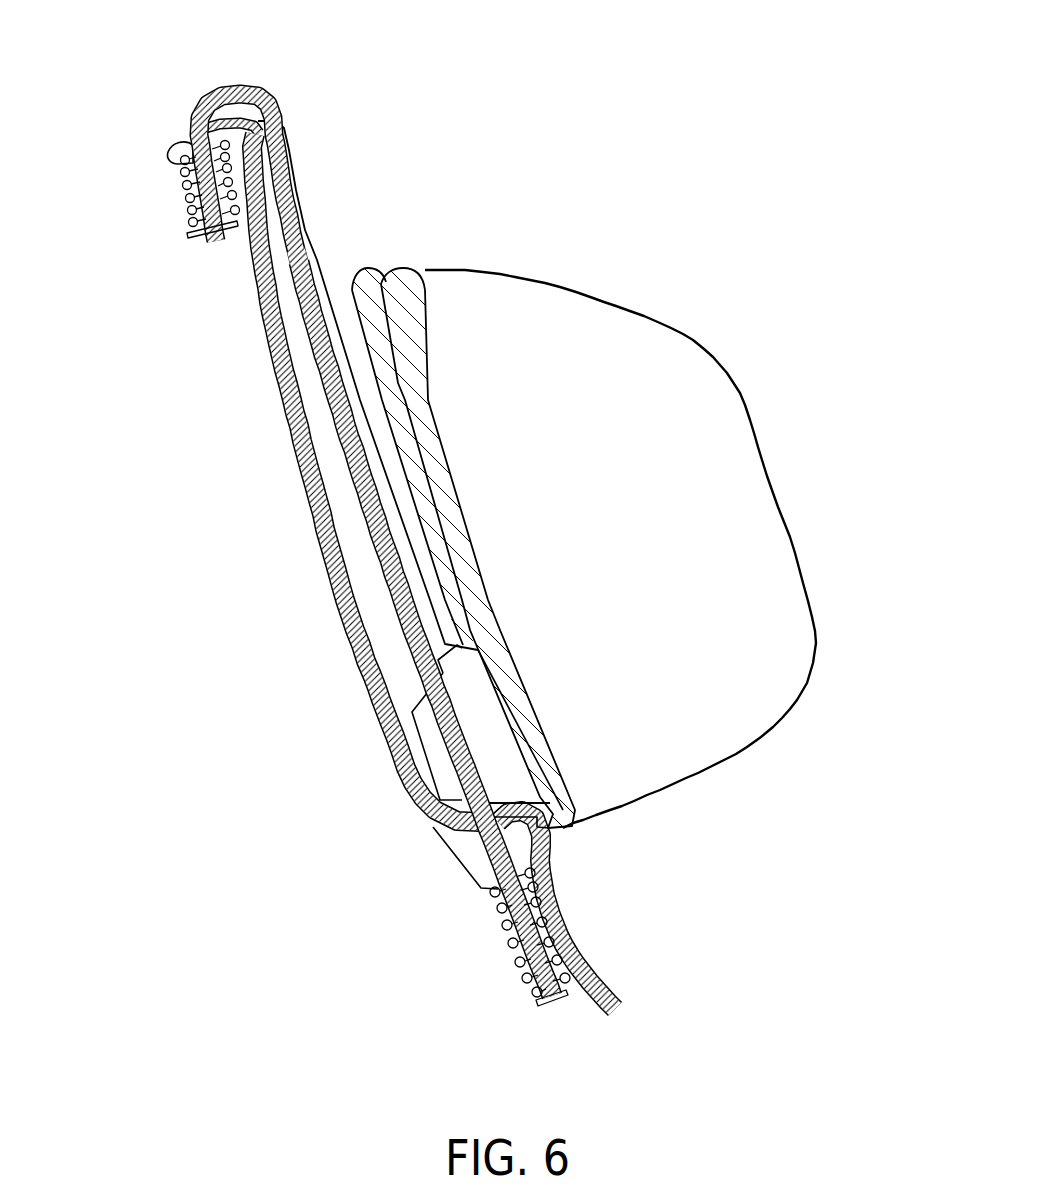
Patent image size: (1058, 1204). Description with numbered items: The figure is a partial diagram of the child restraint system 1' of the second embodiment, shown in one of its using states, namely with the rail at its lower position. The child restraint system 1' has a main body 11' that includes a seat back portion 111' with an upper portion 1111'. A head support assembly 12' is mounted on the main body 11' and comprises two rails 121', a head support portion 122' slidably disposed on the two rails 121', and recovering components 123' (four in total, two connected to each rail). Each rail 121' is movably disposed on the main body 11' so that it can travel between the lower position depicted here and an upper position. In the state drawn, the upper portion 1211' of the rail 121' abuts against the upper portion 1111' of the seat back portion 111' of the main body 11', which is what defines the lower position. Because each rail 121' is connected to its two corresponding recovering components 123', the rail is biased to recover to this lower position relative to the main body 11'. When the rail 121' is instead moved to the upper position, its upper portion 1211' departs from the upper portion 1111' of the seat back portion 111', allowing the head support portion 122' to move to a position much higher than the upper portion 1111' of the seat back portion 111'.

The child restraint system 1' is at (579, 430).
The main body 11' is at (608, 910).
The seat back portion 111' is at (456, 549).
The upper portion of the seat back portion 1111' is at (161, 118).
The head support assembly 12' is at (382, 623).
The rail 121' is at (406, 767).
The head support portion 122' is at (537, 474).
The recovering component 123' is at (376, 574).
The upper portion of the rail 1211' is at (249, 145).